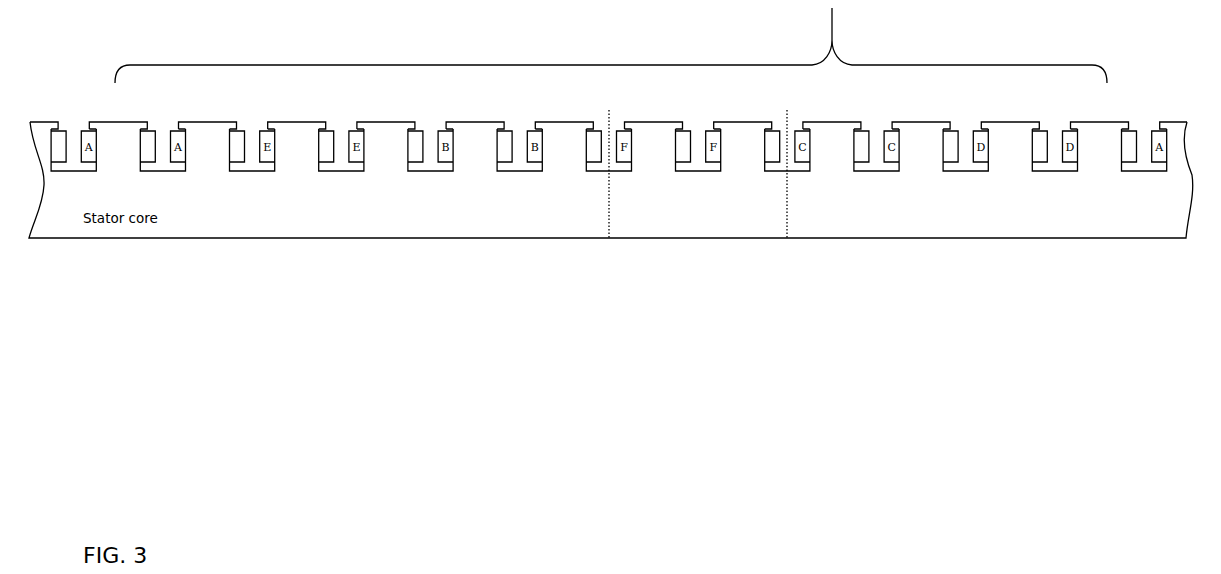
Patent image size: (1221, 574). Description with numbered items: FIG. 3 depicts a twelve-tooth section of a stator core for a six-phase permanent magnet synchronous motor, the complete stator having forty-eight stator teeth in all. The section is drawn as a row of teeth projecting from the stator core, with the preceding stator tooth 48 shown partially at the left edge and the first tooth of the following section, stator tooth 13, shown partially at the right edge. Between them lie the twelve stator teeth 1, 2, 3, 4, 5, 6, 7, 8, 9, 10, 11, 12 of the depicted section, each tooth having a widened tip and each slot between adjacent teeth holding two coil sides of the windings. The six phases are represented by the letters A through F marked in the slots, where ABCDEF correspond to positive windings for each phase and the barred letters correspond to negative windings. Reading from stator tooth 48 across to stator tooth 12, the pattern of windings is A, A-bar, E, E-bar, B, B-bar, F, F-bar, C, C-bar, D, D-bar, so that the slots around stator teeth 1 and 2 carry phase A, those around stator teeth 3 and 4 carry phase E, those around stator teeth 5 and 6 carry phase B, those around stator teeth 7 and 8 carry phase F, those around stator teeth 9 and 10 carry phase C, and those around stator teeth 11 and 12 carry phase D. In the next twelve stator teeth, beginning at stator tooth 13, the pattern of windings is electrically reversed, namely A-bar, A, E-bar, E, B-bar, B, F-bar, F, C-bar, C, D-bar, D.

The stator tooth 48 is at (40, 111).
The stator tooth 1 is at (118, 111).
The stator tooth 2 is at (208, 111).
The stator tooth 3 is at (297, 111).
The stator tooth 4 is at (386, 111).
The stator tooth 5 is at (475, 111).
The stator tooth 6 is at (564, 111).
The stator tooth 7 is at (654, 111).
The stator tooth 8 is at (743, 111).
The stator tooth 9 is at (832, 111).
The stator tooth 10 is at (921, 111).
The stator tooth 11 is at (1010, 111).
The stator tooth 12 is at (1100, 111).
The stator tooth 13 is at (1178, 111).